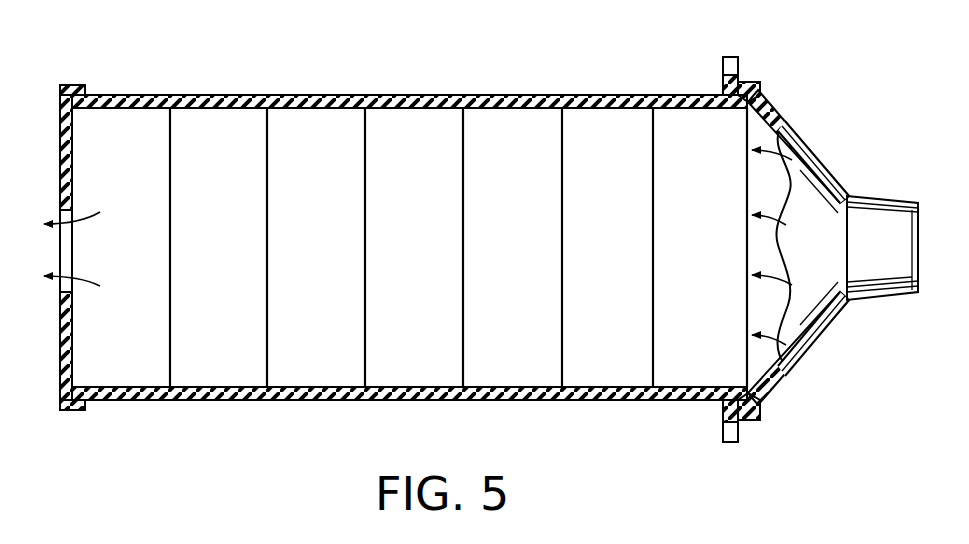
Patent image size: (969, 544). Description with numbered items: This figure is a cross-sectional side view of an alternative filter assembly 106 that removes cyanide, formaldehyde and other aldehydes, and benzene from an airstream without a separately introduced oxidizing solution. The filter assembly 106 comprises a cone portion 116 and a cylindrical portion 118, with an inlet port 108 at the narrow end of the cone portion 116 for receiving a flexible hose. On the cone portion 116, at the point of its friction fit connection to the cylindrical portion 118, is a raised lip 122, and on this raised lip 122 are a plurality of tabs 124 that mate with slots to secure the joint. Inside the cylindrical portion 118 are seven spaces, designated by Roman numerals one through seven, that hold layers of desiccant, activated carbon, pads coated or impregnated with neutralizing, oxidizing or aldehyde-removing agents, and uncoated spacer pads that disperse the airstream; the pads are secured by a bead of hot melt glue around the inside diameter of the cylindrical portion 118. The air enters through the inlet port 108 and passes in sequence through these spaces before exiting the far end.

The filter assembly 106 is at (483, 251).
The cylindrical portion 118 is at (553, 97).
The cone portion 116 is at (795, 148).
The inlet port 108 is at (880, 300).
The raised lip 122 is at (752, 418).
The tabs 124 is at (740, 58).